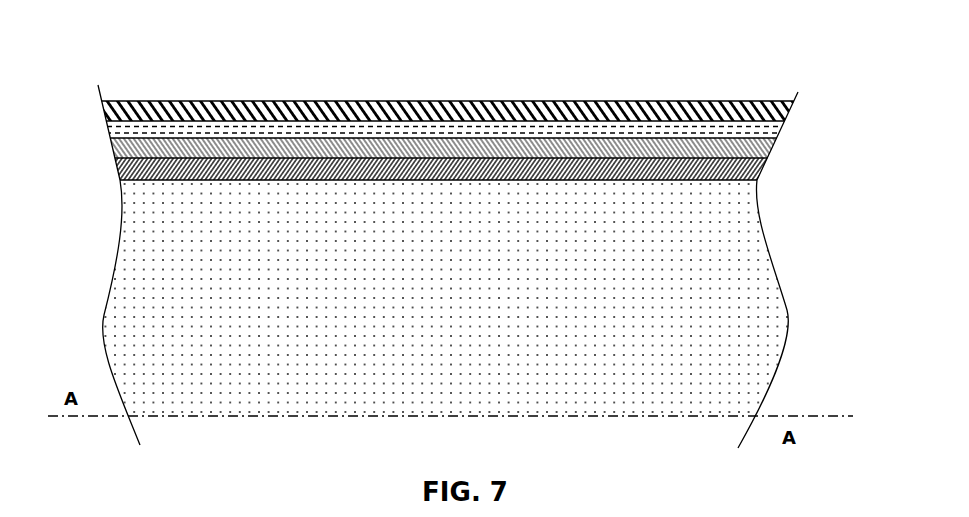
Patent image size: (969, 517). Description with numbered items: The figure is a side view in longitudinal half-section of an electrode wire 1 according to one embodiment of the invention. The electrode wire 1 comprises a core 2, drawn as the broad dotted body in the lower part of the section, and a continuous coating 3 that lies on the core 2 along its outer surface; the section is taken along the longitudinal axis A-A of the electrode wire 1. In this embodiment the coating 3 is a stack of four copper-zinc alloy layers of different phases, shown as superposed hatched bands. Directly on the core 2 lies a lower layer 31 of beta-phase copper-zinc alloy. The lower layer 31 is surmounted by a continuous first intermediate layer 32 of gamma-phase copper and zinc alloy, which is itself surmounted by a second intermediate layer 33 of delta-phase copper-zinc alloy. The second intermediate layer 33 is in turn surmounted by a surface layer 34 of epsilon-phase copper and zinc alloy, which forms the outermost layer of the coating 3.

The electrode wire 1 is at (116, 76).
The core 2 is at (763, 318).
The coating 3 is at (759, 180).
The lower layer 31 is at (120, 173).
The first intermediate layer 32 is at (113, 150).
The second intermediate layer 33 is at (111, 128).
The surface layer 34 is at (110, 109).